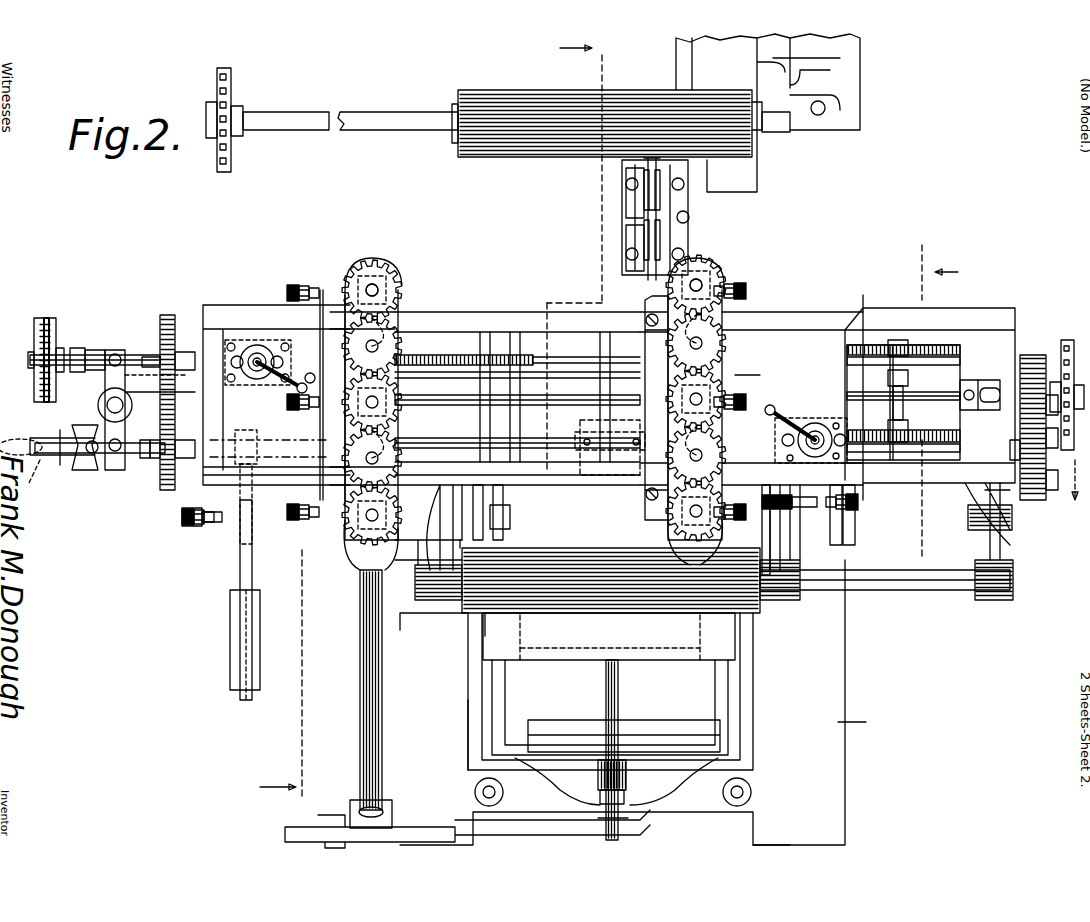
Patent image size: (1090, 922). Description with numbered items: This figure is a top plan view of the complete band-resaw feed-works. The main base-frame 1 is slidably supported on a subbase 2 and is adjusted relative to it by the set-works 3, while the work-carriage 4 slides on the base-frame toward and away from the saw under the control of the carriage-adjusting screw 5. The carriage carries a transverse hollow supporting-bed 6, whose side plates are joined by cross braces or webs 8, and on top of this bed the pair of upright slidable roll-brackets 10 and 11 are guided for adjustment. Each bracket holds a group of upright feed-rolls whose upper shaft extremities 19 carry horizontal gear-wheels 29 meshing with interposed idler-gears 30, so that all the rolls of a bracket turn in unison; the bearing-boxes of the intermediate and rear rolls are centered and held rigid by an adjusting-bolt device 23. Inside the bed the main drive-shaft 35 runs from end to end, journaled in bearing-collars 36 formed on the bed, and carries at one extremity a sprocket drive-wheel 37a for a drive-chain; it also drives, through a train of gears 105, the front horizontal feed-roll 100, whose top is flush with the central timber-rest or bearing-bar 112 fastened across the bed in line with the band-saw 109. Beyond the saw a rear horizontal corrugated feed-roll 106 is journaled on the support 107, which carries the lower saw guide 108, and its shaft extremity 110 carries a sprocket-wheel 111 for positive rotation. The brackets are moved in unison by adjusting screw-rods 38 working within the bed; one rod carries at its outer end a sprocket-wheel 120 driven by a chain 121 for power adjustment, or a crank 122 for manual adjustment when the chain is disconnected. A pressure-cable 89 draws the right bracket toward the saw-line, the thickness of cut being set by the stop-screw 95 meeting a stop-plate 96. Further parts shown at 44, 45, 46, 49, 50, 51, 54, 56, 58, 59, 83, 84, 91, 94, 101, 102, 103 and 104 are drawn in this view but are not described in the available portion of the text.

The main base-frame 1 is at (758, 725).
The subbase 2 is at (815, 702).
The set-works 3 is at (467, 709).
The work-carriage 4 is at (497, 429).
The carriage-adjusting screw 5 is at (580, 423).
The transverse hollow supporting-bed 6 is at (474, 308).
The cross braces or webs 8 is at (480, 378).
The upright slidable roll-bracket 10 is at (295, 435).
The upright slidable roll-bracket 11 is at (761, 373).
The upper shaft extremities 19 is at (372, 284).
The adjusting-bolt device 23 is at (300, 285).
The horizontal gear-wheels 29 is at (402, 278).
The idler-gears 30 is at (400, 335).
The main drive-shaft 35 is at (536, 386).
The bearing-collars 36 is at (995, 380).
The sprocket drive-wheel 37a is at (1067, 384).
The adjusting screw-rods 38 is at (462, 346).
The hub 44 is at (258, 345).
The plate 45 is at (240, 350).
The lever 46 is at (532, 401).
The shaft 49 is at (100, 350).
The disk 50 is at (110, 440).
The link 51 is at (118, 405).
The slide 54 is at (240, 475).
The rod 56 is at (252, 508).
The collar 58 is at (142, 458).
The gear 59 is at (172, 304).
The carriage 83 is at (903, 400).
The rack 84 is at (903, 363).
The pressure-cable 89 is at (517, 355).
The bracket 91 is at (774, 530).
The bracket 94 is at (505, 512).
The stop-screw 95 is at (185, 528).
The stop-plates 96 is at (462, 490).
The front feed-roll 100 is at (540, 556).
The shaft 101 is at (905, 587).
The bearing 102 is at (438, 602).
The bracket 103 is at (415, 600).
The bracket 104 is at (973, 530).
The gears 105 is at (1043, 453).
The rear horizontal corrugated feed-roll 106 is at (498, 90).
The support 107 is at (768, 113).
The lower guide 108 is at (628, 218).
The band-saw 109 is at (690, 226).
The shaft extremity 110 is at (280, 132).
The sprocket-wheel 111 is at (240, 90).
The central timber-rest or bearing-bar 112 is at (645, 408).
The sprocket-wheel 120 is at (56, 320).
The chain 121 is at (44, 318).
The crank 122 is at (49, 463).